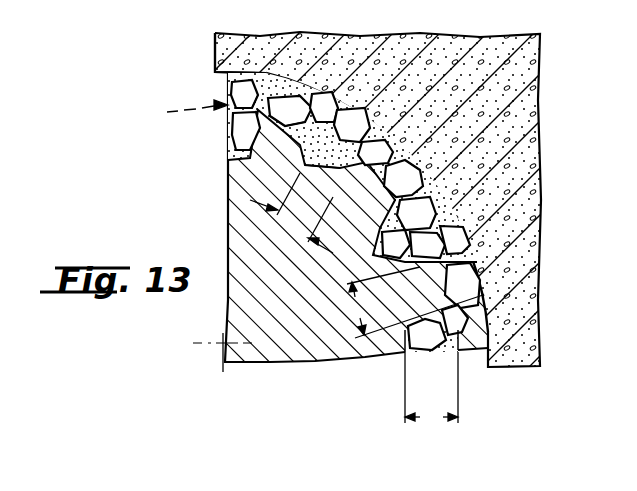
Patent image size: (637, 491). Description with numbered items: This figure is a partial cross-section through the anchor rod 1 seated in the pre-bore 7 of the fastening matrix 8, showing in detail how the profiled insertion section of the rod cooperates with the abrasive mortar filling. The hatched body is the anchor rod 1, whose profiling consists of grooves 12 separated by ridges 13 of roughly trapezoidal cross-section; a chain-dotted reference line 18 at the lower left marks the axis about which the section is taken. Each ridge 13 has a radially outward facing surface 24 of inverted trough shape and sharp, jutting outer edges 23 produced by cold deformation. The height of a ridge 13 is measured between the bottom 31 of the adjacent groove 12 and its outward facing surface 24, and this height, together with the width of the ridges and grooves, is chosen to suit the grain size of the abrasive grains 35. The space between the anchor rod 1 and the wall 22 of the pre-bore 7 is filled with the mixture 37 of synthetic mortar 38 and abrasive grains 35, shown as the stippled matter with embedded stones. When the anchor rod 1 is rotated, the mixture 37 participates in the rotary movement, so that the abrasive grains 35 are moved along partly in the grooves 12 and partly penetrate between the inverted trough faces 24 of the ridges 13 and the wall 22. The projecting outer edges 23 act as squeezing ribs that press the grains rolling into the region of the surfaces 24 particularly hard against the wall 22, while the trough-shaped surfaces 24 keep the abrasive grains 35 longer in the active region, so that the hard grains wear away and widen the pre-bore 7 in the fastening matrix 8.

The anchor rod 1 is at (292, 343).
The pre-bore 7 is at (218, 76).
The wall of the pre-bore 22 is at (240, 53).
The fastening matrix 8 is at (540, 147).
The grooves 12 is at (233, 155).
The ridges 13 is at (267, 133).
The axis 18 is at (223, 343).
The outer edges of the ridges 23 is at (262, 108).
The outward facing surfaces of the ridges 24 is at (290, 120).
The bottom of the grooves 31 is at (408, 350).
The abrasive grains 35 is at (322, 157).
The mortar mixture 37 is at (413, 153).
The synthetic mortar 38 is at (448, 208).